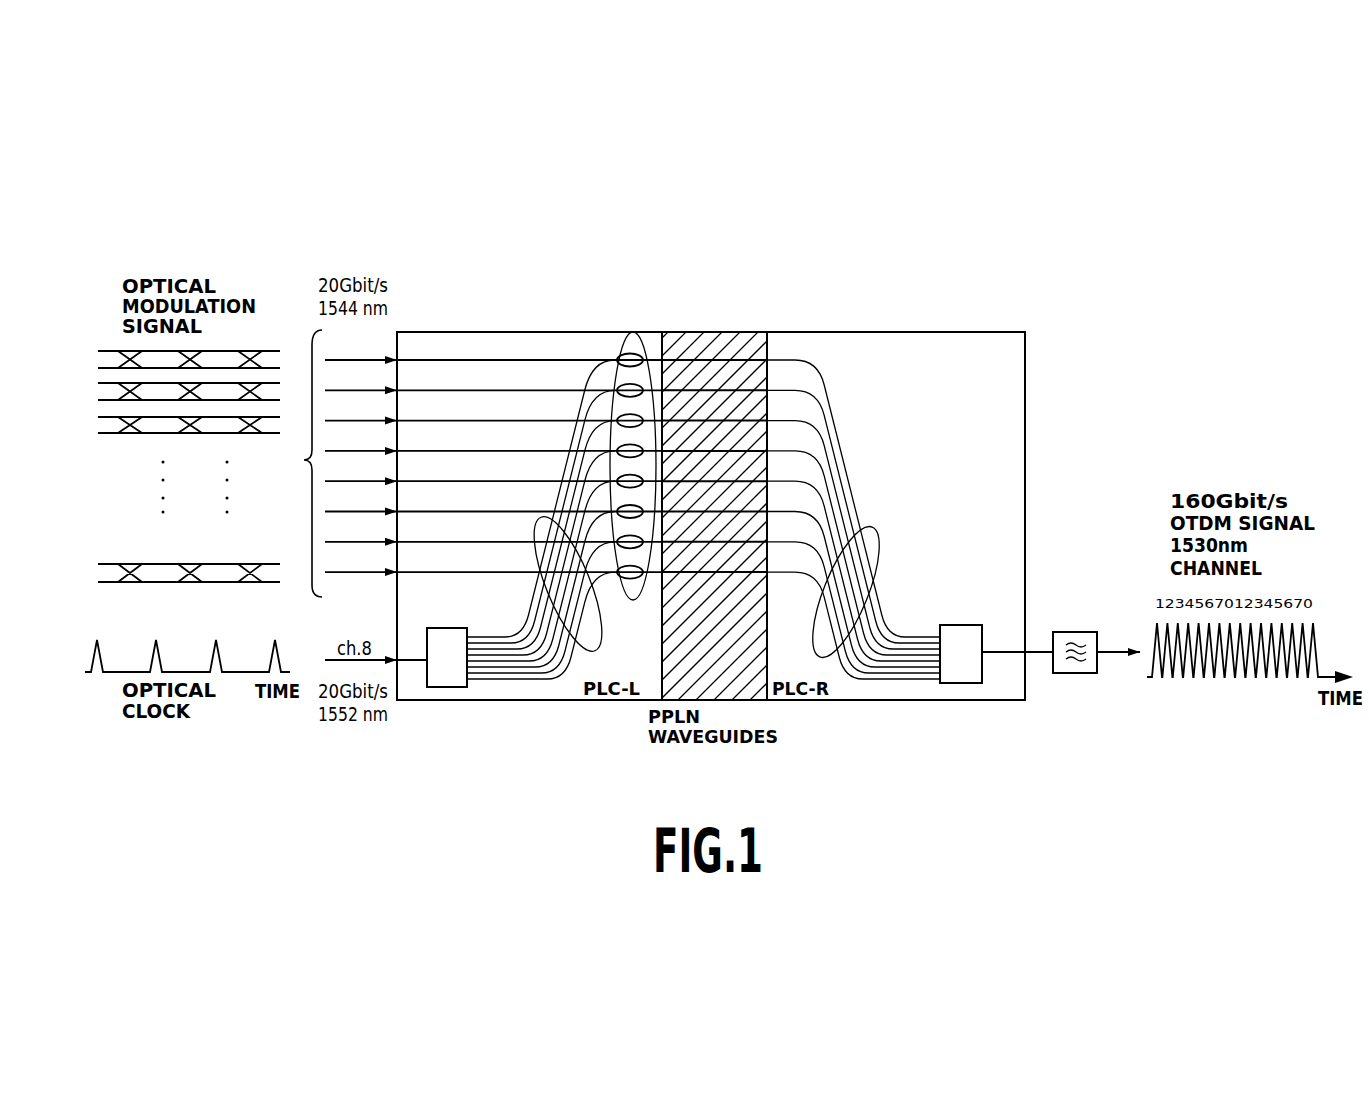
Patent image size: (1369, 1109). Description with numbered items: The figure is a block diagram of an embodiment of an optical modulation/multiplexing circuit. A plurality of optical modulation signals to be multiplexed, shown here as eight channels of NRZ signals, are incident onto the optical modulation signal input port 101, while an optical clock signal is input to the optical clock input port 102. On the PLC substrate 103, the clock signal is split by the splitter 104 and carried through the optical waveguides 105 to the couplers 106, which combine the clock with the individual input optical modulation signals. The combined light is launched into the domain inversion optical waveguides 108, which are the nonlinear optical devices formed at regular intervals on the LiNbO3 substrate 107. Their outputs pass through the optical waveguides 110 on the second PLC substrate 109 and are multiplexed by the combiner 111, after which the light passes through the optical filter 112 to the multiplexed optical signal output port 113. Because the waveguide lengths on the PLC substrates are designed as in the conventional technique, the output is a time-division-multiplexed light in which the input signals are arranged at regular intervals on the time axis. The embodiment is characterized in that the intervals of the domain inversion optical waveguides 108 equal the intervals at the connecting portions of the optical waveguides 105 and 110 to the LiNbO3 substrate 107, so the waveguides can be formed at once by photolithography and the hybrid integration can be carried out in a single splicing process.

The optical modulation signal input port 101 is at (334, 463).
The optical clock input port 102 is at (327, 658).
The PLC substrate 103 is at (462, 336).
The splitter 104 is at (440, 690).
The optical waveguides 105 is at (540, 532).
The couplers 106 is at (633, 332).
The LiNbO3 substrate 107 is at (700, 342).
The domain inversion optical waveguides 108 is at (751, 345).
The PLC substrate 109 is at (922, 352).
The optical waveguides 110 is at (870, 528).
The combiner 111 is at (960, 625).
The optical filter 112 is at (1075, 676).
The multiplexed optical signal output port 113 is at (1128, 647).